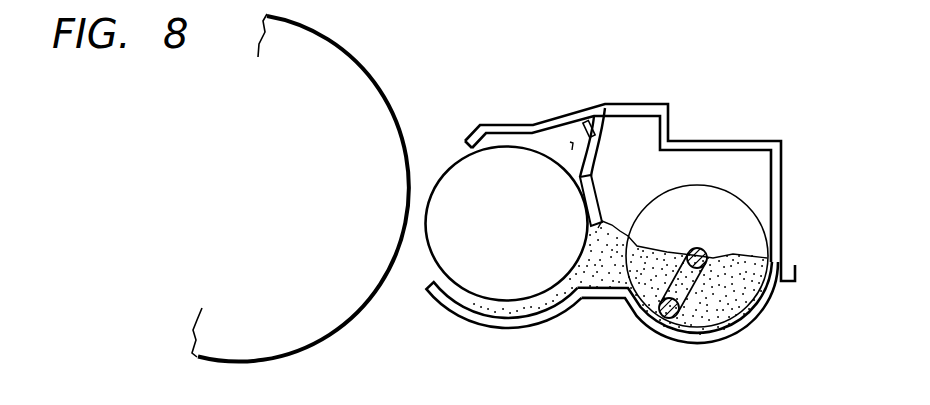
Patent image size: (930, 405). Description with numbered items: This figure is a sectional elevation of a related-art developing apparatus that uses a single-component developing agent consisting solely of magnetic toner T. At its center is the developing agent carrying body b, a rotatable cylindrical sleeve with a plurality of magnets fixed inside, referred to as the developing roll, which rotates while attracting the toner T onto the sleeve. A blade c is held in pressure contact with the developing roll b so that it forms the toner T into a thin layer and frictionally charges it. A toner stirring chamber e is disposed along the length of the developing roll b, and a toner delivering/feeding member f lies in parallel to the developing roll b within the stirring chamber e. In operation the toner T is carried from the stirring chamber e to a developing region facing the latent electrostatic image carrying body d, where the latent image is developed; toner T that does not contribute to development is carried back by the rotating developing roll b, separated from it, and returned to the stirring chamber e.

The latent electrostatic image carrying body d is at (375, 89).
The developing agent carrying body b is at (442, 263).
The blade c is at (569, 146).
The toner stirring chamber e is at (762, 177).
The toner T is at (627, 222).
The toner delivering/feeding member f is at (667, 321).